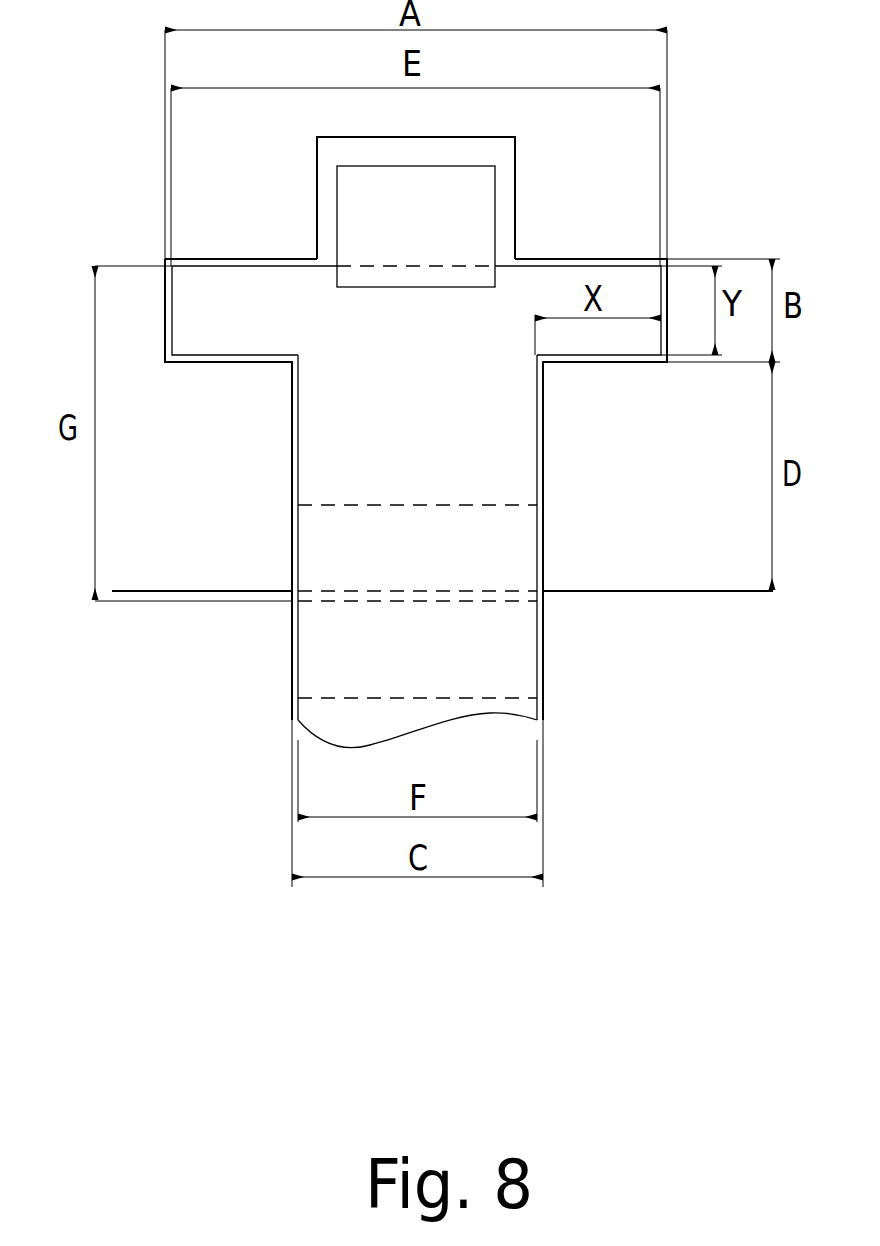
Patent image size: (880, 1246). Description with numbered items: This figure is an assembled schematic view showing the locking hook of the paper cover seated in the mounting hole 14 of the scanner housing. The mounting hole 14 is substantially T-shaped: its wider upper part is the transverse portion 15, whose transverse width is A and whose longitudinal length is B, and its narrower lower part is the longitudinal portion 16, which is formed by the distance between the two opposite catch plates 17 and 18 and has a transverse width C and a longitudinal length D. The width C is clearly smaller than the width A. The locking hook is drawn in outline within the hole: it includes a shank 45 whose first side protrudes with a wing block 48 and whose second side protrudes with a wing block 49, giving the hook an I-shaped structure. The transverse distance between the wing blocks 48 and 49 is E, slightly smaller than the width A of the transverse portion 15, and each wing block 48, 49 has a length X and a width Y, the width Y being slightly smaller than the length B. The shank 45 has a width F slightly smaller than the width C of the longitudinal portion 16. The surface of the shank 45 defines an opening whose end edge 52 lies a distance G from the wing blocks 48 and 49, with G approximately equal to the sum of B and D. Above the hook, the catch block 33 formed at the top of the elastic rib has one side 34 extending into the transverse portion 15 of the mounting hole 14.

The mounting hole 14 is at (156, 245).
The transverse portion 15 is at (647, 258).
The longitudinal portion 16 is at (298, 460).
The catch plate 17 is at (136, 585).
The catch plate 18 is at (610, 512).
The catch block 33 is at (460, 208).
The side of catch block 34 is at (460, 290).
The shank 45 is at (522, 457).
The wing block 48 is at (230, 337).
The wing block 49 is at (600, 278).
The end edge of opening 52 is at (333, 603).